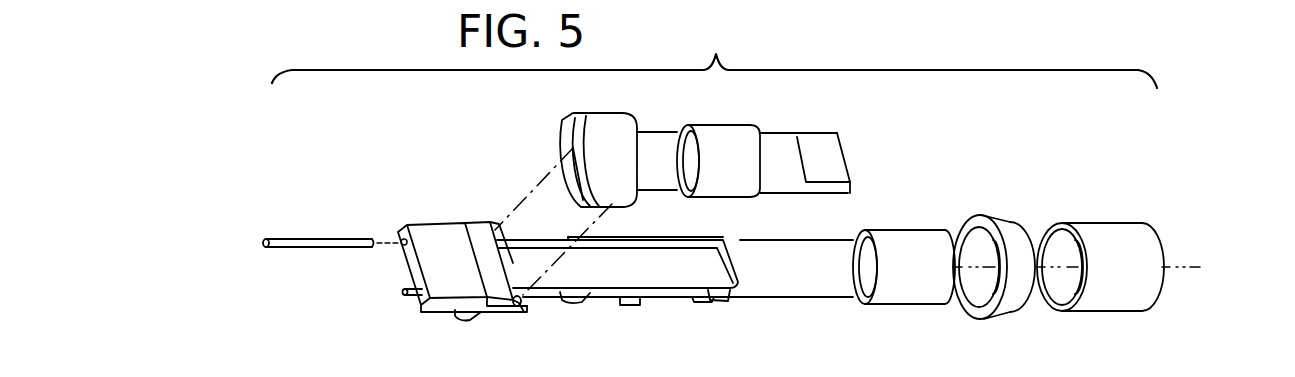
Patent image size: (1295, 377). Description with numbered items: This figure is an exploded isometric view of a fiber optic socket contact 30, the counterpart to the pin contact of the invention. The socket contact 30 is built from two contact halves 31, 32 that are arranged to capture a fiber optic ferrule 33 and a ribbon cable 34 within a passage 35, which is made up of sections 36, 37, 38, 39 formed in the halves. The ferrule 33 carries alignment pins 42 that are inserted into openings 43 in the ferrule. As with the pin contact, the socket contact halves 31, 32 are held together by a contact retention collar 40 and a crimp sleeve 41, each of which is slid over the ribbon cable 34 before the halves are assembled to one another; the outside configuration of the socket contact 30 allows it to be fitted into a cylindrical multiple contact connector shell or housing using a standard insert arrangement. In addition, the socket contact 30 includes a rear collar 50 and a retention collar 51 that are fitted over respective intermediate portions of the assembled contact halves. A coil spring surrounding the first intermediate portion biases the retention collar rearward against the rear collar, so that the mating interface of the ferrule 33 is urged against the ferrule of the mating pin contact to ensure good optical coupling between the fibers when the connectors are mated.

The socket contact 30 is at (960, 168).
The contact half 31 is at (720, 142).
The contact half 32 is at (645, 280).
The fiber optic ferrule 33 is at (452, 236).
The ribbon cable 34 is at (696, 272).
The passage 35 is at (603, 295).
The passage section 36 is at (453, 313).
The passage section 37 is at (509, 313).
The passage section 38 is at (557, 302).
The passage section 39 is at (724, 298).
The contact retention collar 40 is at (900, 240).
The crimp sleeve 41 is at (810, 285).
The alignment pin 42 is at (338, 240).
The opening 43 is at (401, 245).
The rear collar 50 is at (1023, 235).
The retention collar 51 is at (1115, 237).